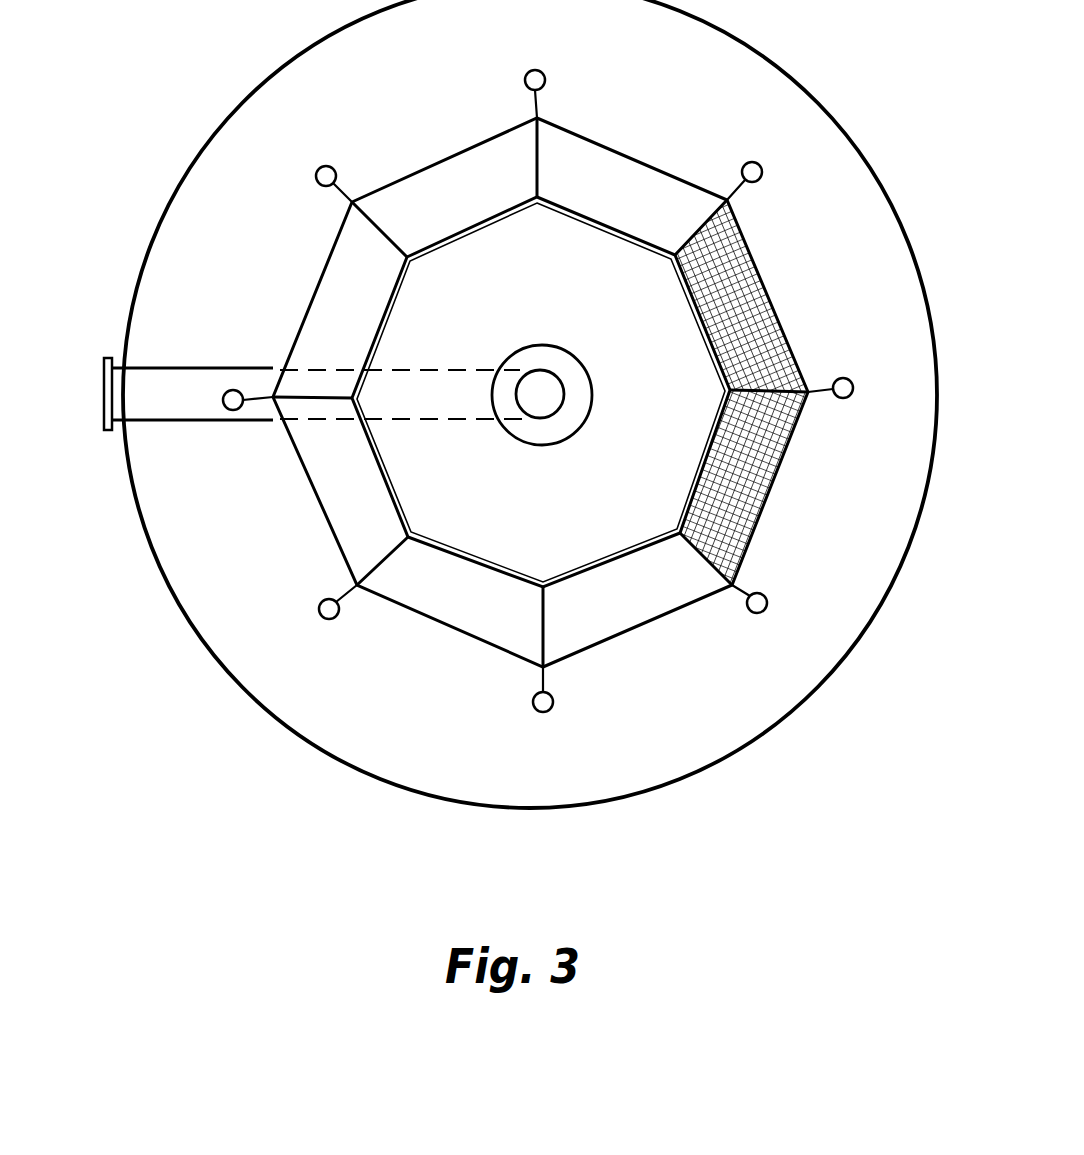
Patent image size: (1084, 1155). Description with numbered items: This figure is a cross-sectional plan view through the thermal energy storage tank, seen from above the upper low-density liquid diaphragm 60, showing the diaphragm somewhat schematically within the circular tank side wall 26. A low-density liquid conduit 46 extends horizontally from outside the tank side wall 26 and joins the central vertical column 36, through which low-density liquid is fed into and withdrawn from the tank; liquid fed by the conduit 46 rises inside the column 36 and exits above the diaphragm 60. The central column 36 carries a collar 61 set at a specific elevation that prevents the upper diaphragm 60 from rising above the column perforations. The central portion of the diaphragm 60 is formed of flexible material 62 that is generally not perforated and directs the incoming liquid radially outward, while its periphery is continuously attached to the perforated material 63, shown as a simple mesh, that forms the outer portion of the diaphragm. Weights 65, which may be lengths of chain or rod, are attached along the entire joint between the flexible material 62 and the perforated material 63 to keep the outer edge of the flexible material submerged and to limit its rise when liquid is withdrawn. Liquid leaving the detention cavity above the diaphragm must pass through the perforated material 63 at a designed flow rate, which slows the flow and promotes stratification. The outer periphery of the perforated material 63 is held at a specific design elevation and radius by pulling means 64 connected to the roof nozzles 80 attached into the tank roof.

The tank side wall 26 is at (880, 170).
The central vertical column 36 is at (549, 371).
The low-density liquid conduit 46 is at (103, 358).
The upper low-density liquid diaphragm 60 is at (310, 490).
The collar 61 is at (597, 393).
The flexible material 62 is at (585, 466).
The perforated material 63 is at (760, 280).
The pulling means 64 is at (740, 588).
The weights 65 is at (707, 458).
The roof nozzles 80 is at (752, 615).